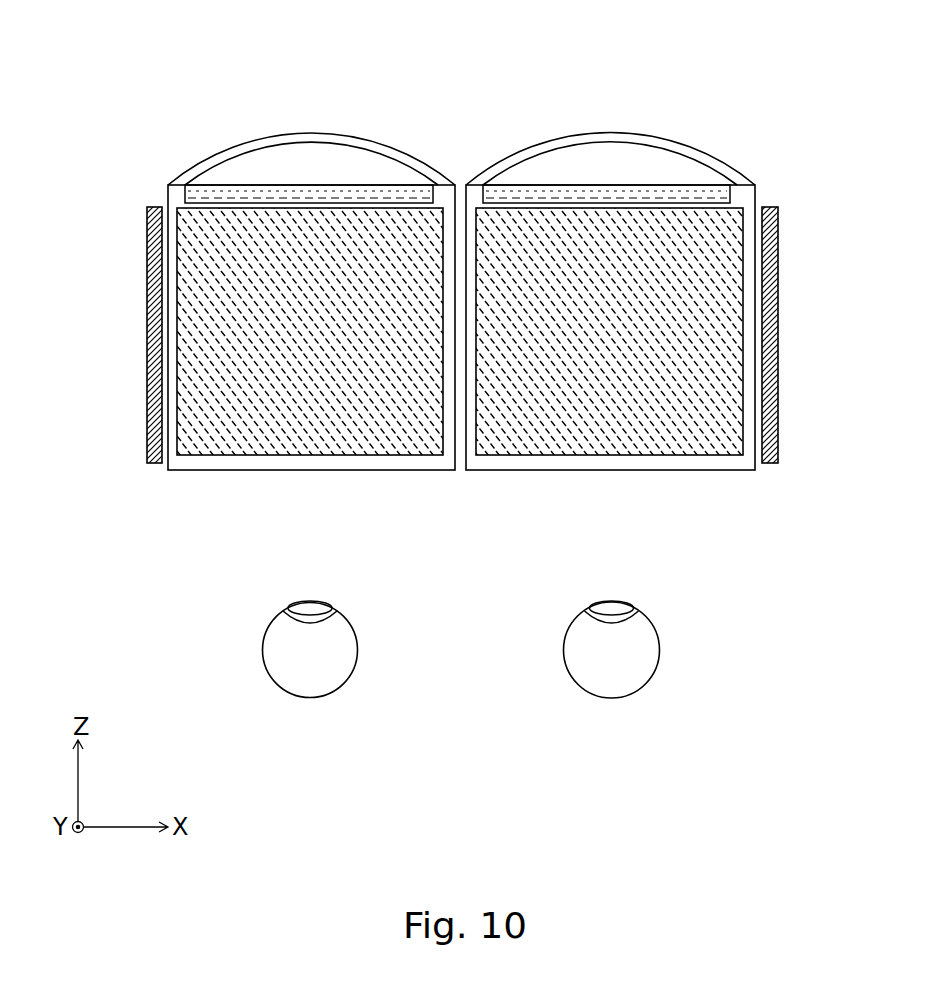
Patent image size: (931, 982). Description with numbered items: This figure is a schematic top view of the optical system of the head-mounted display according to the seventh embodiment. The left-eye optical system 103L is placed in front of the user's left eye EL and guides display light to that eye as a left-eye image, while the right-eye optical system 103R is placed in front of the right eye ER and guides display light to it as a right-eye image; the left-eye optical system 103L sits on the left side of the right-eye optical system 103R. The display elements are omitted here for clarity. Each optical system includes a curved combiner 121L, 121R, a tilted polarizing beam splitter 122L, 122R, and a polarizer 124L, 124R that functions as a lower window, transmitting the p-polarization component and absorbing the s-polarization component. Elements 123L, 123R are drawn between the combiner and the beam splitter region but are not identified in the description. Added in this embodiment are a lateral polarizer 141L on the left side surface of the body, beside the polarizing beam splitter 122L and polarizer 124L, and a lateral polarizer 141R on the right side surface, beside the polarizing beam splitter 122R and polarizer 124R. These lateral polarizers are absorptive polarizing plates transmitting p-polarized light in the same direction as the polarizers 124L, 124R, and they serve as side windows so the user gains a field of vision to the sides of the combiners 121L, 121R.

The left-eye optical system 103L is at (265, 297).
The right-eye optical system 103R is at (640, 305).
The combiner 121L is at (245, 138).
The combiner 121R is at (517, 138).
The polarizing beam splitter 122L is at (285, 437).
The polarizing beam splitter 122R is at (535, 437).
The left optical plate 123L is at (350, 192).
The right optical plate 123R is at (670, 192).
The polarizer 124L is at (387, 470).
The polarizer 124R is at (665, 470).
The lateral polarizer 141L is at (152, 463).
The lateral polarizer 141R is at (760, 463).
The left eye EL is at (267, 647).
The right eye ER is at (657, 638).